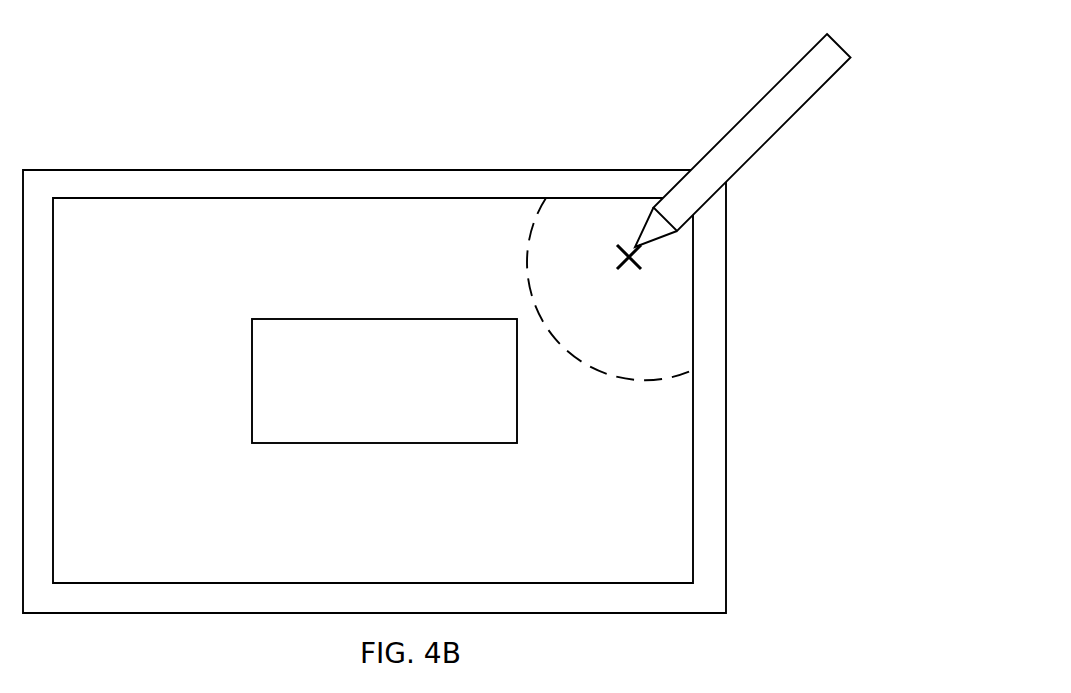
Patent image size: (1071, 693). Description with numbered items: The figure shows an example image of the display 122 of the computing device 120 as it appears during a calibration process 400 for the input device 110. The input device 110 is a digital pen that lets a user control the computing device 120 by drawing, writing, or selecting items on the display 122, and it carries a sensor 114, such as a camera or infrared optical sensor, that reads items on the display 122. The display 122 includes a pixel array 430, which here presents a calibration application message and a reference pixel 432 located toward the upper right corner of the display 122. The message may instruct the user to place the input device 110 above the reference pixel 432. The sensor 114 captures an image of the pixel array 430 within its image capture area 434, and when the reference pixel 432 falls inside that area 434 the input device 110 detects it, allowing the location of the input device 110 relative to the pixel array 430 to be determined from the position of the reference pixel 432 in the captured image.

The calibration environment / display system 400 is at (371, 373).
The input device 110 is at (711, 140).
The sensor 114 is at (655, 203).
The computing device 120 is at (392, 170).
The display 122 is at (623, 583).
The pixel array 430 is at (340, 238).
The reference pixel 432 is at (641, 260).
The image capture area 434 is at (678, 321).